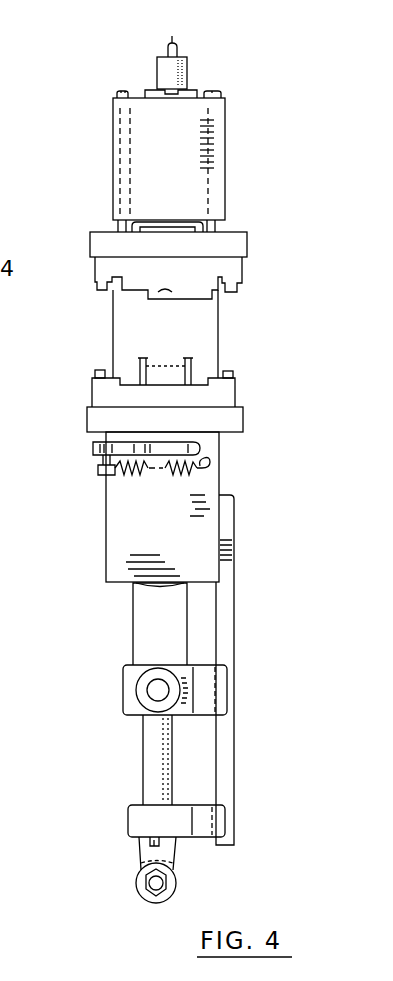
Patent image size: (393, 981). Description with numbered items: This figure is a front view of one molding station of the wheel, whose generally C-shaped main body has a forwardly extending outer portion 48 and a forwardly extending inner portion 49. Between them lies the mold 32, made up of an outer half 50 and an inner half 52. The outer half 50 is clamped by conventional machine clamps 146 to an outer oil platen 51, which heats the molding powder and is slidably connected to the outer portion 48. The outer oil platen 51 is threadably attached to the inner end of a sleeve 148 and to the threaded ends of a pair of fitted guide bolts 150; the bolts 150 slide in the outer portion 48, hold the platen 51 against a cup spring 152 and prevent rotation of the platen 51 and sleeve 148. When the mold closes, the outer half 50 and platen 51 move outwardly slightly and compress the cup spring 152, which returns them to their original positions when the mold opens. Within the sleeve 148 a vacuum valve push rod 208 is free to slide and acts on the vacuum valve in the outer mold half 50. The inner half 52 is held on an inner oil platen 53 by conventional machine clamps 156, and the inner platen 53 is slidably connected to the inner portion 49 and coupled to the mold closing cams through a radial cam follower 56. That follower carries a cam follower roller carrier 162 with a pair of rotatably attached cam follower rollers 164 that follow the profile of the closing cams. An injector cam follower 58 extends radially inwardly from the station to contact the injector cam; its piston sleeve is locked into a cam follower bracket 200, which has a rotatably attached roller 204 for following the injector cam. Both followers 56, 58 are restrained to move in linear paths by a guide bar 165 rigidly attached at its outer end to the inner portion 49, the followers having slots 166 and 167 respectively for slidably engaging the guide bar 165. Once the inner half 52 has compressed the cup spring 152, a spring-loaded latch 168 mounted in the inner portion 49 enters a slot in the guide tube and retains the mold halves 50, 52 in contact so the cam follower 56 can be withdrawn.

The vacuum valve push rod 208 is at (172, 46).
The sleeve 148 is at (187, 70).
The outer portion 48 is at (184, 179).
The fitted guide bolts 150 is at (208, 110).
The cup spring 152 is at (182, 224).
The outer oil platen 51 is at (232, 243).
The outer half of the mold 50 is at (208, 265).
The machine clamps 146 is at (215, 280).
The mold 32 is at (288, 250).
The inner half of the mold 52 is at (218, 396).
The machine clamps 156 is at (90, 393).
The inner oil platen 53 is at (242, 423).
The spring-loaded latch 168 is at (88, 458).
The inner portion 49 is at (173, 540).
The guide bar 165 is at (230, 578).
The radial cam follower 56 is at (138, 622).
The cam follower roller carrier 162 is at (132, 676).
The cam follower rollers 164 is at (142, 698).
The slot 166 is at (222, 690).
The injector cam follower 58 is at (145, 750).
The cam follower bracket 200 is at (133, 820).
The slot 167 is at (225, 820).
The roller 204 is at (136, 883).